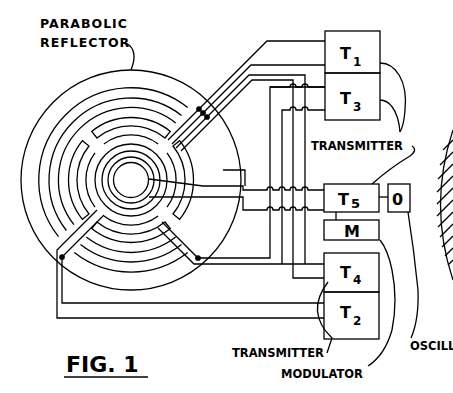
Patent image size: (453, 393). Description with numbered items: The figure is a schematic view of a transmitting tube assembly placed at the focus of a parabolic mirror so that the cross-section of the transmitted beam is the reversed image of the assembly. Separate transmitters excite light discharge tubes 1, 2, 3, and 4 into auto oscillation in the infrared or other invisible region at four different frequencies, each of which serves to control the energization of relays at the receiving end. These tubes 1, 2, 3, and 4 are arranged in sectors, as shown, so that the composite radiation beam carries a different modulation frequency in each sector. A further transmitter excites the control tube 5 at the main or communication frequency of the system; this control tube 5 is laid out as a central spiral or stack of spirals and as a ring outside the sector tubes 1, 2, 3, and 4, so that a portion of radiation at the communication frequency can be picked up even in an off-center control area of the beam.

The light discharge tube 1 is at (166, 124).
The light discharge tube 2 is at (51, 252).
The light discharge tube 3 is at (194, 265).
The light discharge tube 4 is at (206, 121).
The control tube 5 is at (215, 152).